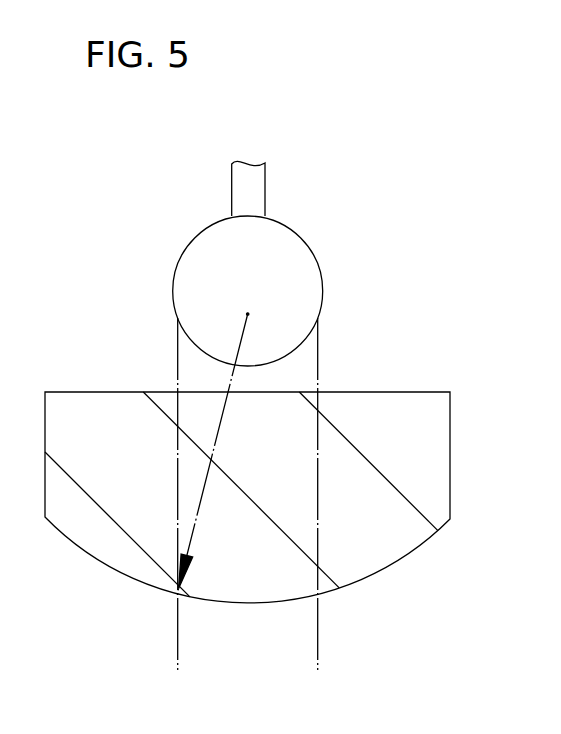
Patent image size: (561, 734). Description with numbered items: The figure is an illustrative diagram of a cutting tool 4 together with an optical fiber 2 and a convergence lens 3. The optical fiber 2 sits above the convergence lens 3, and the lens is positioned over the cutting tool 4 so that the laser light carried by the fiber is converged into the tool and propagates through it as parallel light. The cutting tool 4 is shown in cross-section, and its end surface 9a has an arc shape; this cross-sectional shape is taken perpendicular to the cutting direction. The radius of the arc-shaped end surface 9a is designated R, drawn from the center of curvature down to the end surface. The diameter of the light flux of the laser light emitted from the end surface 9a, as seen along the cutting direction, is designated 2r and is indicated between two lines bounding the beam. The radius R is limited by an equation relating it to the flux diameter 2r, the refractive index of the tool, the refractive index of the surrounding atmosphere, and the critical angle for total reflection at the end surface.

The optical fiber 2 is at (231, 187).
The convergence lens 3 is at (323, 290).
The cutting tool 4 is at (460, 382).
The end surface of cutting tool 9a is at (390, 575).
The radius of end surface R is at (203, 493).
The diameter of light flux 2r is at (318, 642).